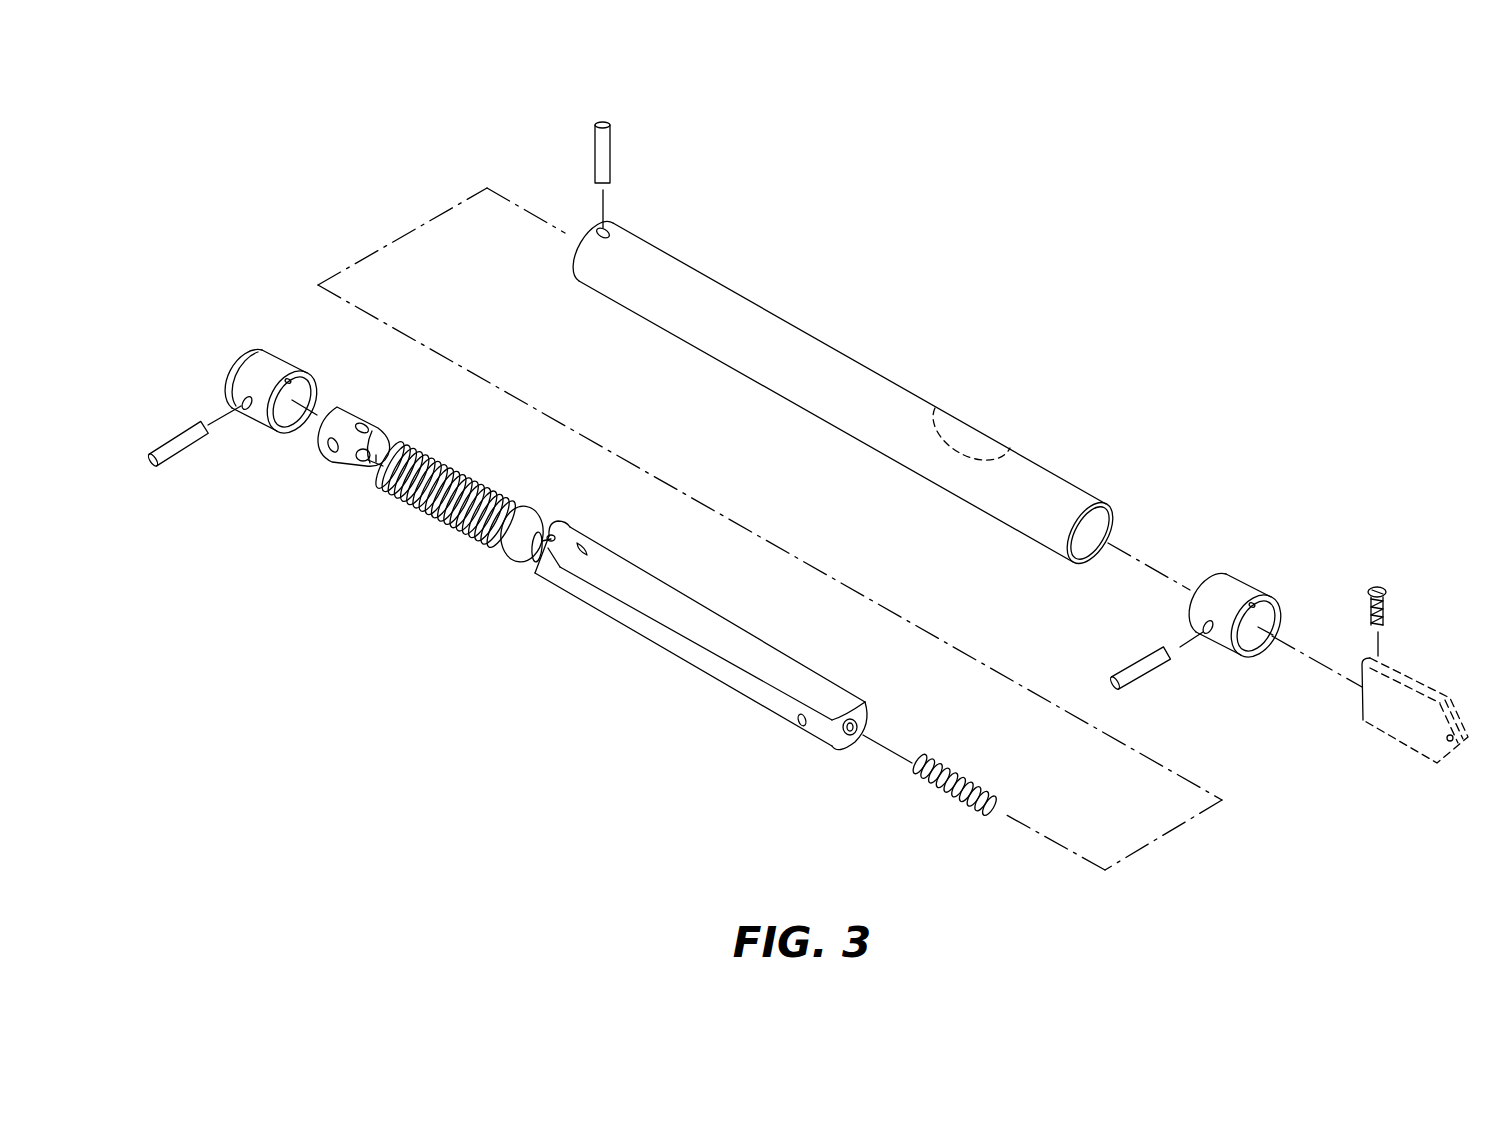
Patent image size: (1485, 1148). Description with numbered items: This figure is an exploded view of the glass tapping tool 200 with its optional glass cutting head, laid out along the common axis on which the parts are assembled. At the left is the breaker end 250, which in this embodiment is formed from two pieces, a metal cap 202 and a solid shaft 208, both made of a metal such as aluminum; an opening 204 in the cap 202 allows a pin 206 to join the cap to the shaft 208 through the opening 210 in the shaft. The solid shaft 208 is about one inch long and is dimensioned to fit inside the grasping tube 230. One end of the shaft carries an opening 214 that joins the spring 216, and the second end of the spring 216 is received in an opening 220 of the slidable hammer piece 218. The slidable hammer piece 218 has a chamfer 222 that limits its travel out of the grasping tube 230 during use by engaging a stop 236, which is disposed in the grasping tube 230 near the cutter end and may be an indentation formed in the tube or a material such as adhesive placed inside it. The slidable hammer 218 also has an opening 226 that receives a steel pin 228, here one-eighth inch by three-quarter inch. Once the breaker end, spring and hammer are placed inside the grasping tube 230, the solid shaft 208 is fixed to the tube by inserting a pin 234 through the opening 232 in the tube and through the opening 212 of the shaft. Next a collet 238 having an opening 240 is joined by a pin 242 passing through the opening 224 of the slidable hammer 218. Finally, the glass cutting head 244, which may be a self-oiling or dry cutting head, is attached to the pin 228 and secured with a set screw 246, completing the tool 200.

The glass tapping tool 200 is at (688, 909).
The metal cap 202 is at (276, 367).
The opening 204 is at (246, 409).
The pin 206 is at (171, 451).
The solid shaft 208 is at (341, 413).
The opening 210 is at (330, 452).
The opening 212 is at (366, 424).
The opening 214 is at (355, 462).
The spring 216 is at (443, 467).
The slidable hammer piece 218 is at (668, 633).
The opening 220 is at (529, 568).
The chamfer 222 is at (577, 546).
The opening 224 is at (803, 728).
The opening 226 is at (864, 718).
The pin 228 is at (963, 786).
The grasping tube 230 is at (822, 352).
The opening 232 is at (605, 230).
The pin 234 is at (605, 148).
The stop 236 is at (966, 425).
The collet 238 is at (1240, 592).
The opening 240 is at (1207, 634).
The pin 242 is at (1139, 682).
The glass cutting head 244 is at (1394, 738).
The set screw 246 is at (1380, 583).
The breaker end 250 is at (232, 368).